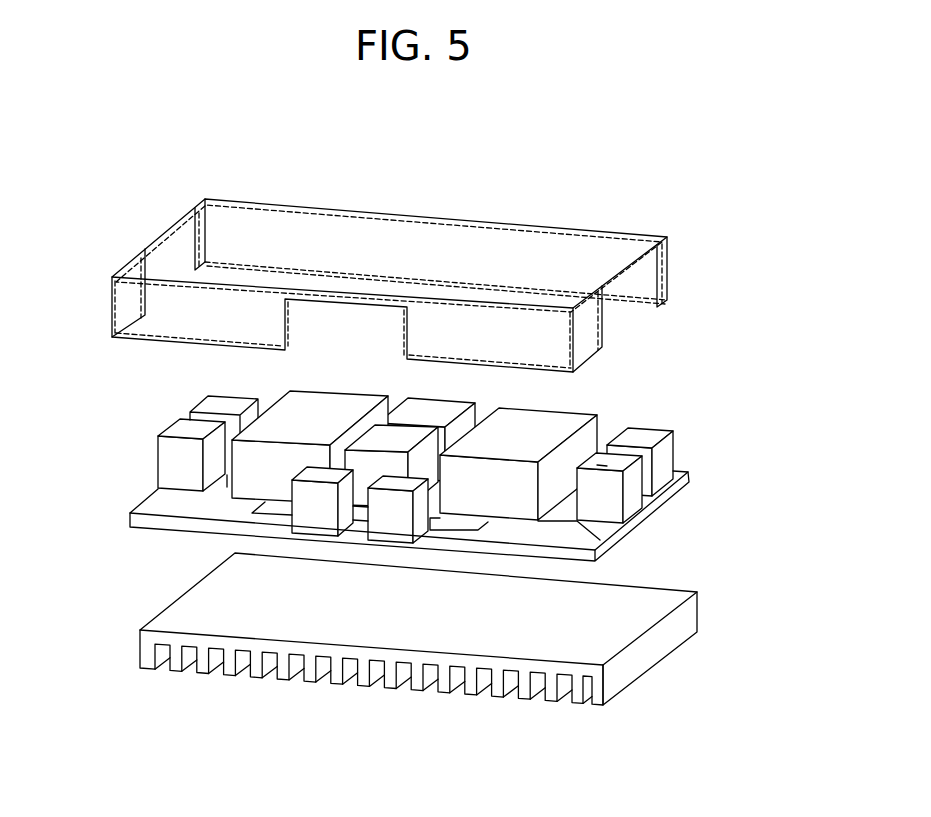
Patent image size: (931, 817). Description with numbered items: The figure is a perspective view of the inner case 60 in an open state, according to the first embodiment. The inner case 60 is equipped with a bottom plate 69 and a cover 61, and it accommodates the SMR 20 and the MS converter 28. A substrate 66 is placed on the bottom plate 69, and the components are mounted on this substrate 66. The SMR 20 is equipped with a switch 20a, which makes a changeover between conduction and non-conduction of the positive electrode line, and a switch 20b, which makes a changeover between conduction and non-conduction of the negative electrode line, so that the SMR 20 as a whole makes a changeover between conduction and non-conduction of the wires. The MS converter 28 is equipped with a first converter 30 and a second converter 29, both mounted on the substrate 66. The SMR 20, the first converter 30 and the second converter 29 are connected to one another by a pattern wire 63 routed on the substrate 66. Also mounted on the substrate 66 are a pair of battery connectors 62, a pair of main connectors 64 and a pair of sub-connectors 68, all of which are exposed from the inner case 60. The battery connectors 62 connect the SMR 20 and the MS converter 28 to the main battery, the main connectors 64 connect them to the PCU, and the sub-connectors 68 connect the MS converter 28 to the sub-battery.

The SMR 20 is at (477, 434).
The switch 20a is at (450, 407).
The switch 20b is at (498, 408).
The MS converter 28 is at (461, 513).
The second converter 29 is at (520, 498).
The first converter 30 is at (305, 455).
The inner case 60 is at (465, 452).
The cover 61 is at (672, 276).
The battery connectors 62 is at (175, 451).
The pattern wire 63 is at (217, 487).
The main connectors 64 is at (636, 494).
The substrate 66 is at (676, 495).
The sub-connectors 68 is at (383, 529).
The bottom plate 69 is at (687, 627).